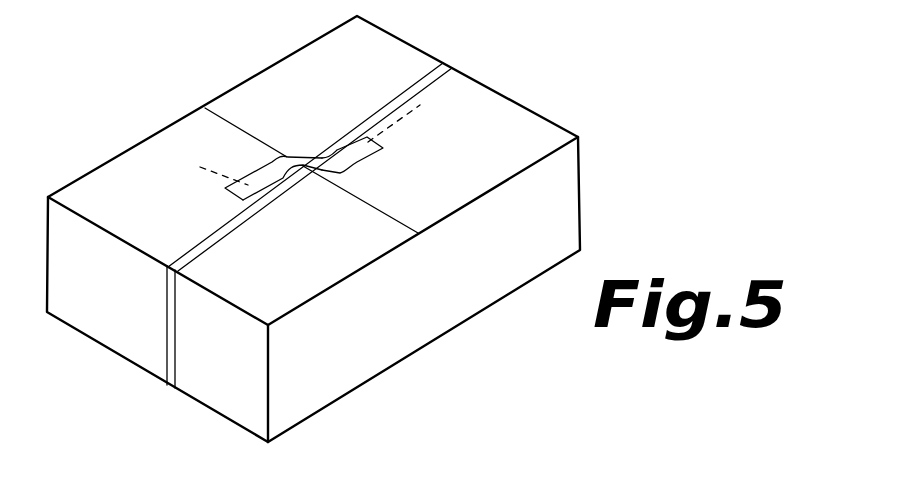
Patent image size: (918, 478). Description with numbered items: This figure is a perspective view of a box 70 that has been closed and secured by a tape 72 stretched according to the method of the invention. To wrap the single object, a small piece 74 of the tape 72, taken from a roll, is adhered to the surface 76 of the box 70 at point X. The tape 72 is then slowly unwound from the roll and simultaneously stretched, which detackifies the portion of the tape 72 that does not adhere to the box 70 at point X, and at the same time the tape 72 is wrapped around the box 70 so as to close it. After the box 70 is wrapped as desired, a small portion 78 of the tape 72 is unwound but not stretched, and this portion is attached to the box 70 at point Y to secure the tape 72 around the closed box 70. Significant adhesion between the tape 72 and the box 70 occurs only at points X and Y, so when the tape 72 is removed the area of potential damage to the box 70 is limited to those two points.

The box 70 is at (640, 134).
The tape 72 is at (443, 65).
The small piece of the tape 74 is at (257, 185).
The surface of the box 76 is at (132, 162).
The small portion of the tape 78 is at (350, 159).